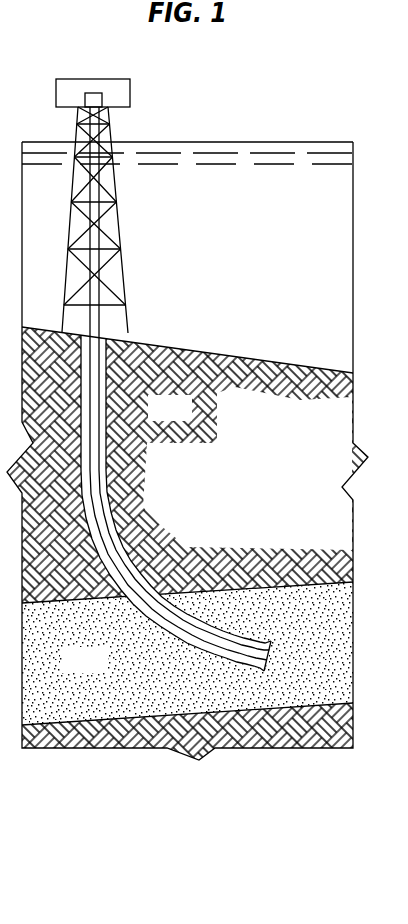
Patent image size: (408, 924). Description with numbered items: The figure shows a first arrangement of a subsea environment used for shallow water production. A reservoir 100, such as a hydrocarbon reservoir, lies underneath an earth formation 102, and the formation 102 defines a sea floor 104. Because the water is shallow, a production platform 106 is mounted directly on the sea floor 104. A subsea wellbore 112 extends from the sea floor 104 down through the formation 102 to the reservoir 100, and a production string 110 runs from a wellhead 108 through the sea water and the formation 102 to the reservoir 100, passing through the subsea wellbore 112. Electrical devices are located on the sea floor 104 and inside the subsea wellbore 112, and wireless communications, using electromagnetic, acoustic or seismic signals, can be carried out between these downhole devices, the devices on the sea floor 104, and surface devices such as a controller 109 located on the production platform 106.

The reservoir 100 is at (105, 670).
The earth formation 102 is at (190, 418).
The sea floor 104 is at (255, 360).
The production platform 106 is at (118, 227).
The wellhead 108 is at (67, 79).
The controller 109 is at (105, 99).
The production string 110 is at (98, 490).
The subsea wellbore 112 is at (110, 512).